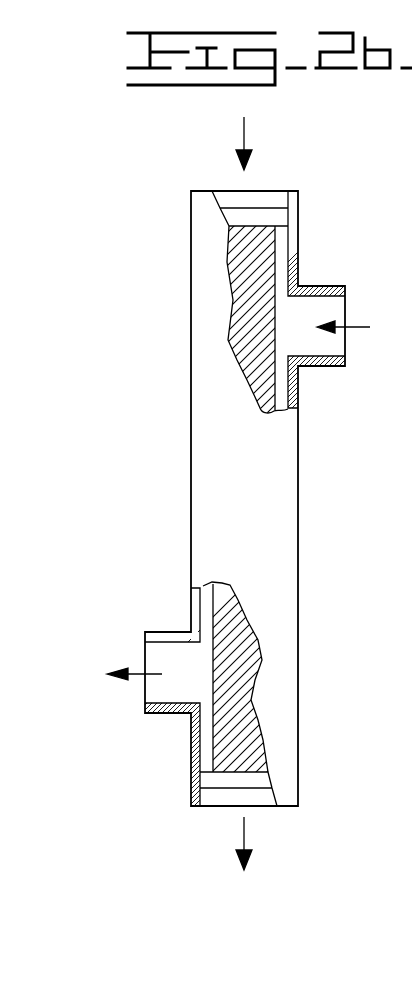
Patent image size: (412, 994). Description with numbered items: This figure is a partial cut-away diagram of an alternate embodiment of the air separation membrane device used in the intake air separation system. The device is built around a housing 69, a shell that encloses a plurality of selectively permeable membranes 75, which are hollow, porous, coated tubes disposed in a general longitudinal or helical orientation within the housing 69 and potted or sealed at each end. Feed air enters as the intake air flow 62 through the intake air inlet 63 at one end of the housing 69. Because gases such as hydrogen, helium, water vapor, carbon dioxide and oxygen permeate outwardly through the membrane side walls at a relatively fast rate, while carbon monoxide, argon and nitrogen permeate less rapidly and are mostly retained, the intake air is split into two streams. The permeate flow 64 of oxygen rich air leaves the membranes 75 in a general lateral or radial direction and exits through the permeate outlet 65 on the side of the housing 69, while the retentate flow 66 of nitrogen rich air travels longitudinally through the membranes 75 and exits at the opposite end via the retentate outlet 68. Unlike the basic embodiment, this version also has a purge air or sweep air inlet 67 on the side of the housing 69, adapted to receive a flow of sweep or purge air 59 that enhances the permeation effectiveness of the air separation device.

The sweep air or purge air flow 59 is at (356, 327).
The intake air flow 62 is at (242, 143).
The intake air inlet 63 is at (268, 191).
The permeate flow 64 is at (138, 675).
The permeate outlet 65 is at (143, 652).
The retentate flow 66 is at (247, 841).
The purge air or sweep air inlet 67 is at (345, 304).
The retentate outlet 68 is at (212, 806).
The housing 69 is at (287, 595).
The selectively permeable membranes 75 is at (245, 344).